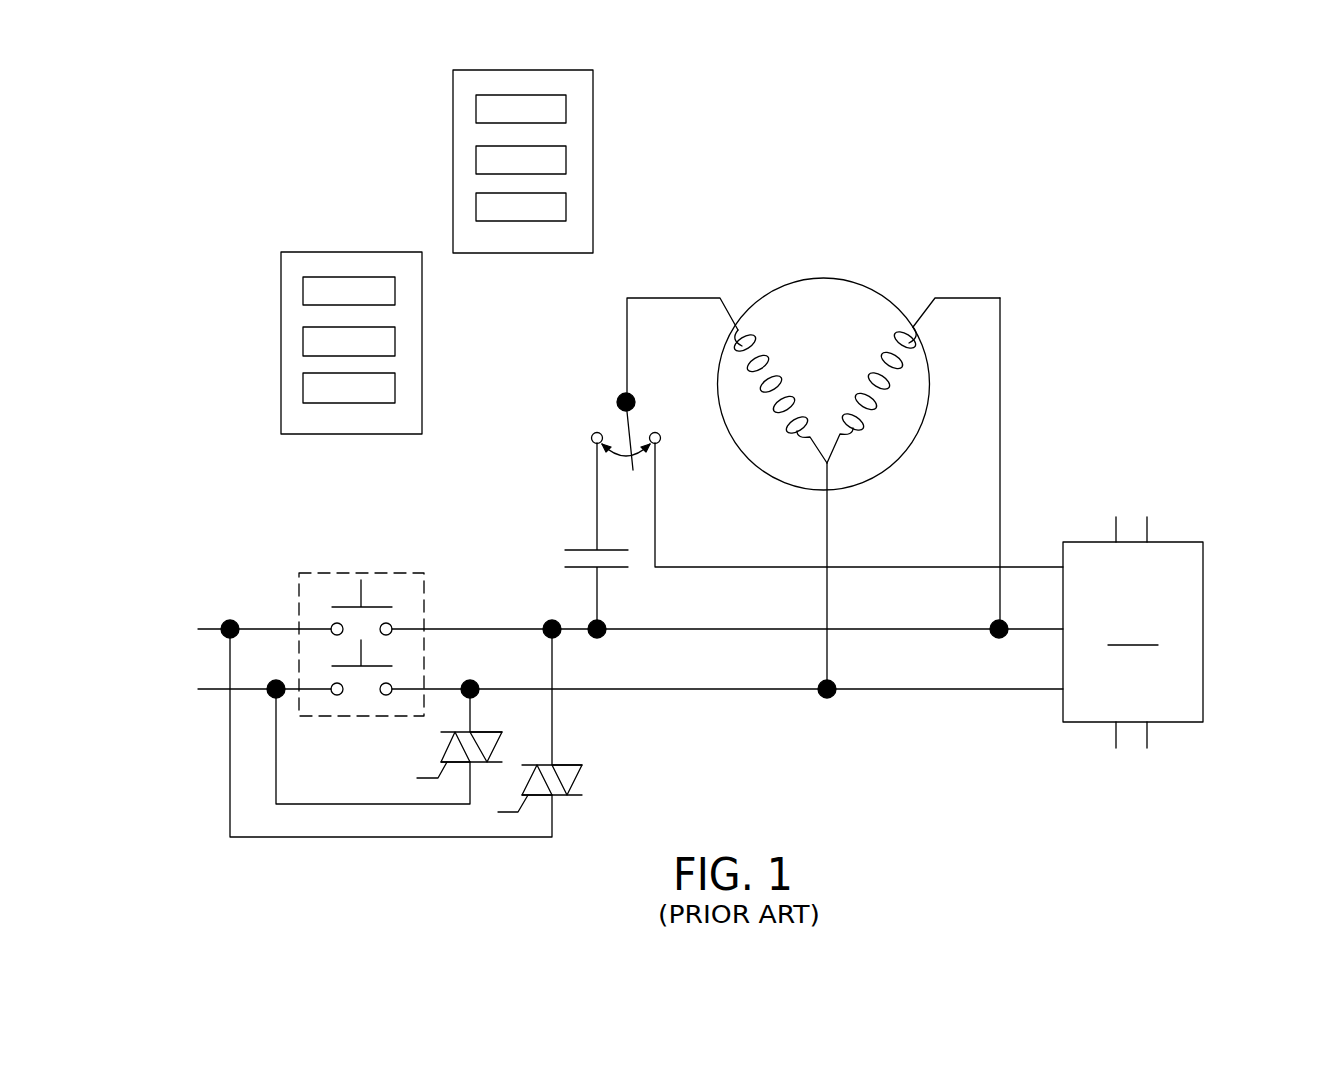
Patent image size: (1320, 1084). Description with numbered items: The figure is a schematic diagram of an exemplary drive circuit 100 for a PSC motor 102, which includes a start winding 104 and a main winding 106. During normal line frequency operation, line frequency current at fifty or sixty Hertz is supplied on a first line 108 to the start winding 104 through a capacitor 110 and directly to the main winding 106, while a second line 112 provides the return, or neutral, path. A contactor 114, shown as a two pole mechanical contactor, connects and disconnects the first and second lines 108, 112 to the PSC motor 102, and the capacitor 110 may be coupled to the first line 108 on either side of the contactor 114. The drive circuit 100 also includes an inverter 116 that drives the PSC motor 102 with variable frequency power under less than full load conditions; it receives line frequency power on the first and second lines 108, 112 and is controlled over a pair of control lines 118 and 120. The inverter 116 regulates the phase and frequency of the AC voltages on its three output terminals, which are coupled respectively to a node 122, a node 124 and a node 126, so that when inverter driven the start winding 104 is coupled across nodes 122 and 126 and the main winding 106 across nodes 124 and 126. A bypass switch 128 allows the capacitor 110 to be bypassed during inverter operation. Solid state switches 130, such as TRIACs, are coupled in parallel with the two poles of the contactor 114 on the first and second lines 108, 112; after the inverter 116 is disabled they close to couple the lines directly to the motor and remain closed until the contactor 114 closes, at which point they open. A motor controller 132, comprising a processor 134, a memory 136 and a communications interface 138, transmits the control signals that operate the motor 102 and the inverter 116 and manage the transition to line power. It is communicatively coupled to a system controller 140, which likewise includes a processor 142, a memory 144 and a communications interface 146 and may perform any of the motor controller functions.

The drive circuit 100 is at (1047, 218).
The PSC motor 102 is at (797, 278).
The start winding 104 is at (740, 352).
The main winding 106 is at (893, 335).
The first line L1 108 is at (208, 628).
The capacitor 110 is at (574, 550).
The second line L2 112 is at (210, 690).
The contactor 114 is at (336, 572).
The inverter 116 is at (1141, 624).
The control line Y1 118 is at (1116, 530).
The control line Y2 120 is at (1147, 530).
The node 122 is at (1020, 567).
The node 124 is at (999, 638).
The node 126 is at (820, 698).
The bypass switch 128 is at (605, 420).
The solid state switches 130 is at (442, 748).
The motor controller 132 is at (453, 122).
The processor 134 is at (566, 107).
The memory 136 is at (566, 161).
The communications interface 138 is at (566, 208).
The system controller 140 is at (281, 303).
The processor 142 is at (395, 291).
The memory 144 is at (395, 341).
The communications interface 146 is at (395, 388).